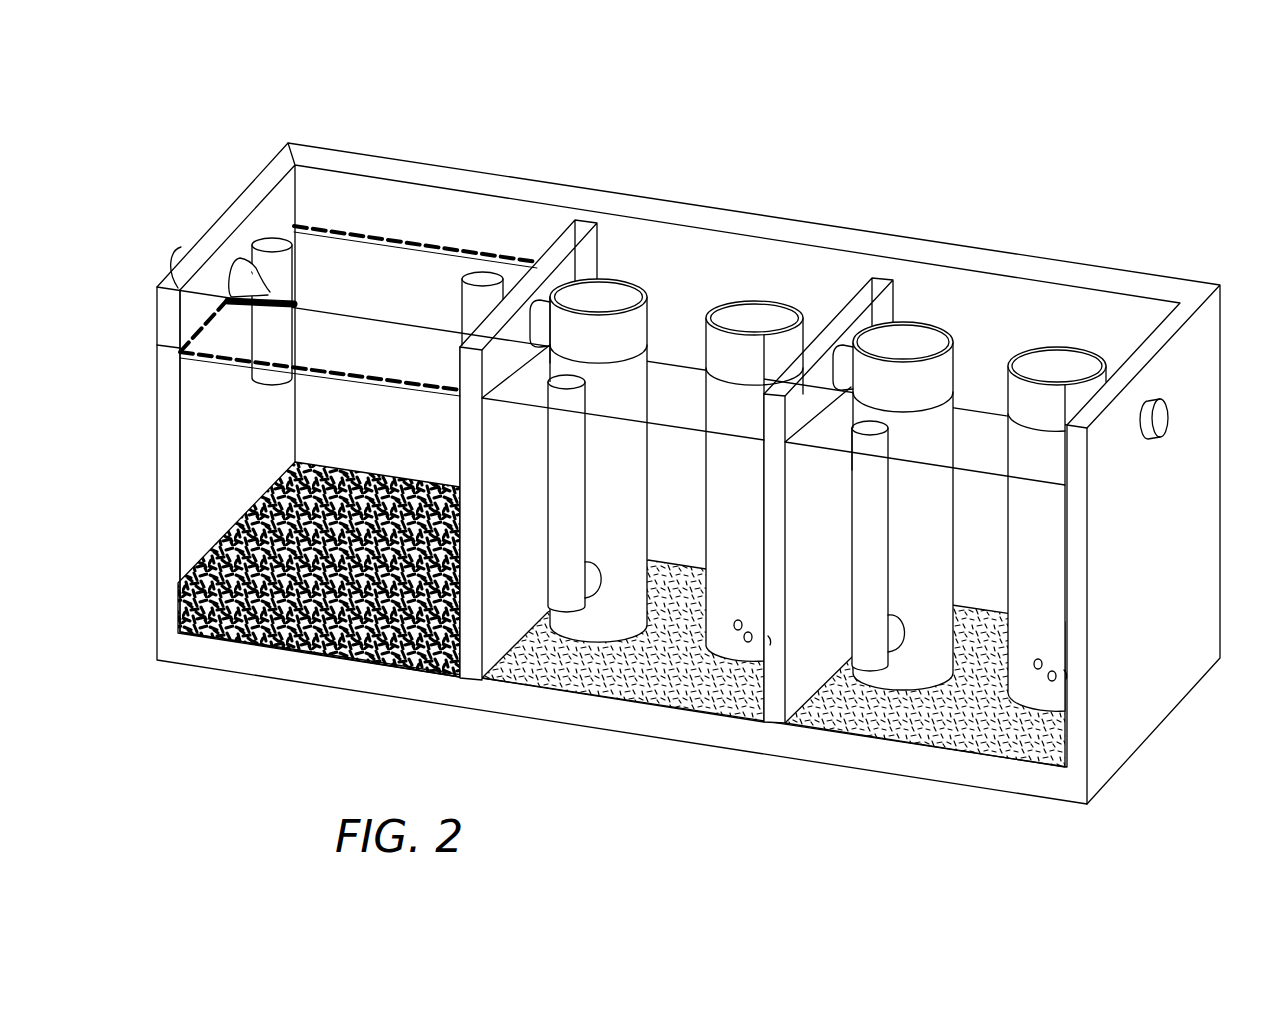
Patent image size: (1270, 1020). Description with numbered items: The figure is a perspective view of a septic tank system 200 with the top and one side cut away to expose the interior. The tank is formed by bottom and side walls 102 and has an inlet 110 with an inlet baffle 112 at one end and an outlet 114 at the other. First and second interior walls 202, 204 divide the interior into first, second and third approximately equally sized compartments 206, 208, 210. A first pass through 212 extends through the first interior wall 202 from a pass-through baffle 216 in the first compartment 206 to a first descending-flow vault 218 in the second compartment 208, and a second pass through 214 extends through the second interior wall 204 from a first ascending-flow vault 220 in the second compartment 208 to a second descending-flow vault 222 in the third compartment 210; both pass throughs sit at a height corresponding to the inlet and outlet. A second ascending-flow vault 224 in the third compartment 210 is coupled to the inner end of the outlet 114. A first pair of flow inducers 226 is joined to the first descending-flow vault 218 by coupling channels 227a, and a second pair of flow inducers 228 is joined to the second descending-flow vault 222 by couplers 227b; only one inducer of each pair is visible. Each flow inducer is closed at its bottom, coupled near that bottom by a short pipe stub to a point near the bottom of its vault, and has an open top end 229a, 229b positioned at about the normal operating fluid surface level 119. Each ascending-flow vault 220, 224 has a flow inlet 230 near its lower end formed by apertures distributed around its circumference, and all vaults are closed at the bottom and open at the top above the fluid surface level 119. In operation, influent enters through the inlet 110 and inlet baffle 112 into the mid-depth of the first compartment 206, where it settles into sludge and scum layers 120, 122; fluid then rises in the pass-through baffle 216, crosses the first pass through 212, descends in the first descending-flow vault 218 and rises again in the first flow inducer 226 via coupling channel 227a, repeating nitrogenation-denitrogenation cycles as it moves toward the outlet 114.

The septic tank system 200 is at (1205, 118).
The bottom and side walls 102 is at (313, 153).
The first compartment 206 is at (405, 178).
The second compartment 208 is at (705, 225).
The third compartment 210 is at (990, 268).
The inlet 110 is at (178, 250).
The inlet baffle 112 is at (285, 268).
The normal operating fluid surface level 119 is at (150, 352).
The sludge layer 120 is at (245, 478).
The scum layer 122 is at (385, 415).
The first interior wall 202 is at (548, 253).
The second interior wall 204 is at (852, 300).
The pass-through baffle 216 is at (462, 306).
The first descending-flow vault 218 is at (668, 272).
The first ascending-flow vault 220 is at (728, 302).
The second descending-flow vault 222 is at (950, 336).
The second ascending-flow vault 224 is at (1037, 348).
The first pass through 212 is at (545, 320).
The second pass through 214 is at (853, 362).
The first pair of flow inducers 226 is at (583, 472).
The second pair of flow inducers 228 is at (854, 530).
The coupling channels 227a is at (570, 374).
The couplers 227b is at (866, 420).
The top end of first flow inducer 229a is at (587, 575).
The top end of second flow inducer 229b is at (896, 628).
The flow inlet 230 is at (748, 632).
The outlet 114 is at (1152, 434).